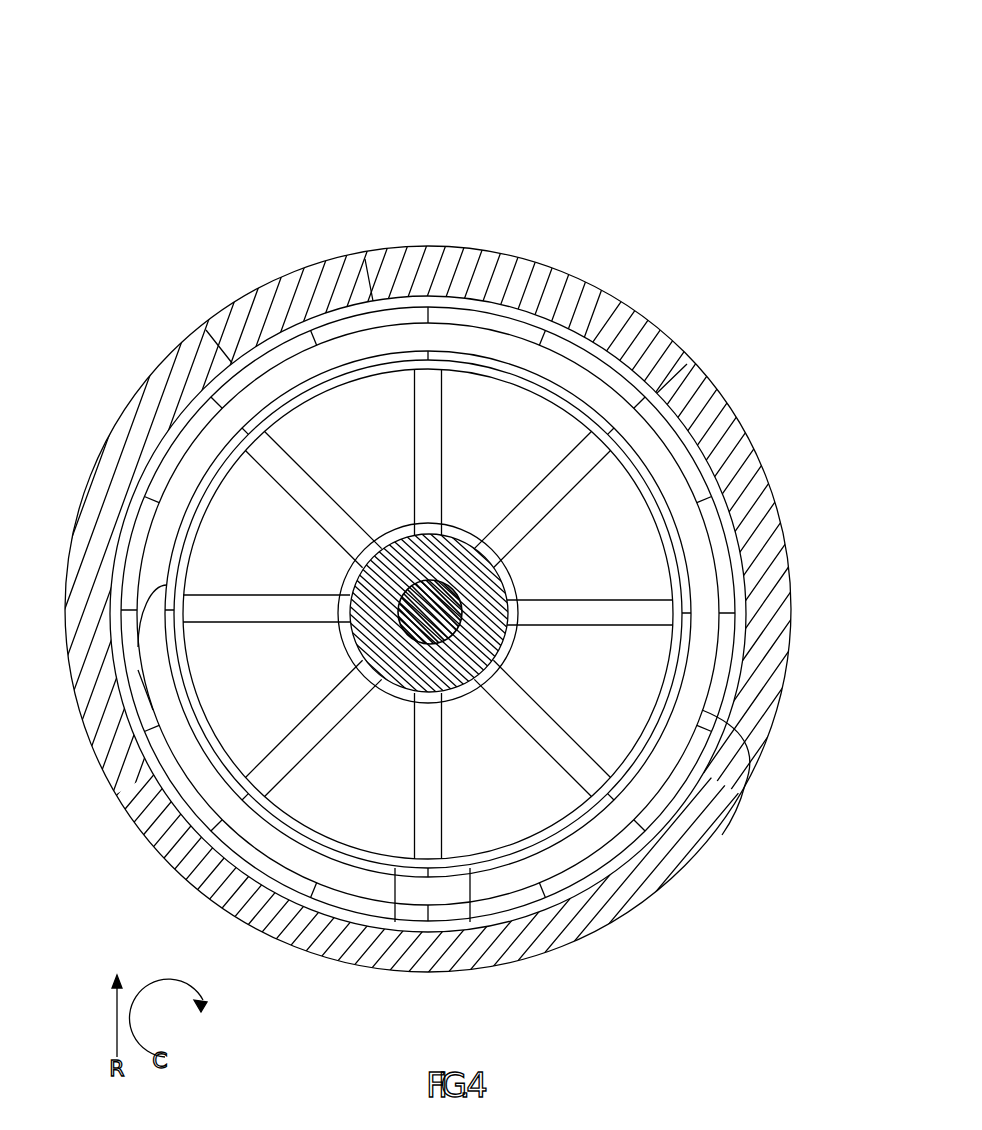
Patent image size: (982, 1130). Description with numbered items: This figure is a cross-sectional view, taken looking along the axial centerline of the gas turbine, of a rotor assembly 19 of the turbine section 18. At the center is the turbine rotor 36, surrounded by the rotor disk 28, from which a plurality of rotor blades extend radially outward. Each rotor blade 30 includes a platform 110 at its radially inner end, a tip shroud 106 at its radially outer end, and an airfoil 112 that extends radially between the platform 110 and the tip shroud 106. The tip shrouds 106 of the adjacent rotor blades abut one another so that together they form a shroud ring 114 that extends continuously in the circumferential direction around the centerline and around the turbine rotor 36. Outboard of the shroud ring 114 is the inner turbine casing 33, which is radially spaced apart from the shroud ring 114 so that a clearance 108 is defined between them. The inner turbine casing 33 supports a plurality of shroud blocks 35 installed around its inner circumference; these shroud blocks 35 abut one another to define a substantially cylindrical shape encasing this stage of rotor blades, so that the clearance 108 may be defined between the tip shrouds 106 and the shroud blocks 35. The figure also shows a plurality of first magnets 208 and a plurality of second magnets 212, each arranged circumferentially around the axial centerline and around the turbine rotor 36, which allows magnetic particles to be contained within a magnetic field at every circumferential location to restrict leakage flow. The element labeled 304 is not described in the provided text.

The rotor assembly 19 is at (123, 108).
The turbine section 18 is at (108, 250).
The inner turbine casing 33 is at (600, 300).
The shroud blocks 35 is at (371, 293).
The clearance 108 is at (440, 336).
The first magnets 208 is at (123, 557).
The second magnets 212 is at (400, 930).
The tip shroud 106 is at (290, 417).
The airfoil 112 is at (414, 448).
The rotor blade 30 is at (442, 472).
The rotor disk 28 is at (472, 534).
The platform 110 is at (350, 568).
The turbine rotor 36 is at (458, 636).
The hub flange 304 is at (391, 696).
The shroud ring 114 is at (700, 637).